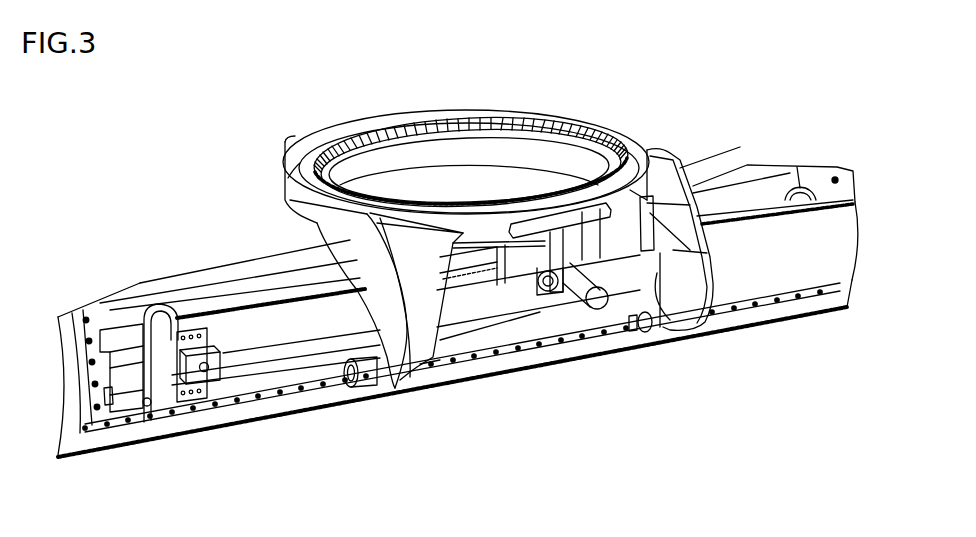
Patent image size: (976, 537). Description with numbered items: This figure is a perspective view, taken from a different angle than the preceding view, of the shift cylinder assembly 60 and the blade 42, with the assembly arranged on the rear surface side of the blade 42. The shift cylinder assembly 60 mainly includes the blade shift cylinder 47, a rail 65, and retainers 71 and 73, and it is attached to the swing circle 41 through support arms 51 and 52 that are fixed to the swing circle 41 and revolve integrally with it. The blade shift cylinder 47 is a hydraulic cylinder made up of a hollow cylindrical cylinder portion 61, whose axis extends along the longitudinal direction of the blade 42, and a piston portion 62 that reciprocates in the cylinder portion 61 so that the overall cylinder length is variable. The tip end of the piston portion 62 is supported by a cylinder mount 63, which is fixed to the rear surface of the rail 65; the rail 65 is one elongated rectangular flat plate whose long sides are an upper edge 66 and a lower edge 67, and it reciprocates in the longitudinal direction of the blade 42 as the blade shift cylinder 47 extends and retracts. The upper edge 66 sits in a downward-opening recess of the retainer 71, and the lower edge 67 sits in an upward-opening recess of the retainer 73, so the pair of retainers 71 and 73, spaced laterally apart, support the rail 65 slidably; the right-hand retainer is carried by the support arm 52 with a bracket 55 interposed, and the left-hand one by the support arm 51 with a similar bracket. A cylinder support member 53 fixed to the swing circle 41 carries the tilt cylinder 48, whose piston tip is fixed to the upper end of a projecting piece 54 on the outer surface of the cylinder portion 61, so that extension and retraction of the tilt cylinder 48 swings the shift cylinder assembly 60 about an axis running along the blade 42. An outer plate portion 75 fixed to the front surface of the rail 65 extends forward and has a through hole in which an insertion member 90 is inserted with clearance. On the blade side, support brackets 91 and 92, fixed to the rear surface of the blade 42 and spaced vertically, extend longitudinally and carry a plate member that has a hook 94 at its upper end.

The swing circle 41 is at (405, 116).
The blade 42 is at (84, 440).
The blade shift cylinder 47 is at (458, 332).
The tilt cylinder 48 is at (582, 290).
The support arm 51 is at (292, 196).
The support arm 52 is at (632, 143).
The cylinder support member 53 is at (550, 298).
The projecting piece 54 is at (503, 268).
The bracket 55 is at (650, 312).
The shift cylinder assembly 60 is at (433, 366).
The cylinder portion 61 is at (488, 328).
The piston portion 62 is at (320, 345).
The cylinder mount 63 is at (210, 384).
The rail 65 is at (263, 378).
The upper edge 66 is at (260, 307).
The lower edge 67 is at (284, 392).
The retainer 71 is at (646, 226).
The retainer 73 is at (633, 333).
The outer plate portion 75 is at (145, 408).
The insertion member 90 is at (152, 398).
The support bracket 91 is at (122, 312).
The support bracket 92 is at (122, 412).
The hook 94 is at (163, 308).